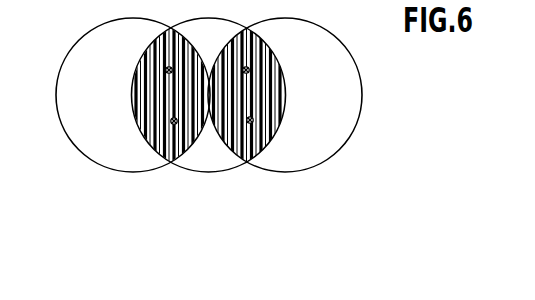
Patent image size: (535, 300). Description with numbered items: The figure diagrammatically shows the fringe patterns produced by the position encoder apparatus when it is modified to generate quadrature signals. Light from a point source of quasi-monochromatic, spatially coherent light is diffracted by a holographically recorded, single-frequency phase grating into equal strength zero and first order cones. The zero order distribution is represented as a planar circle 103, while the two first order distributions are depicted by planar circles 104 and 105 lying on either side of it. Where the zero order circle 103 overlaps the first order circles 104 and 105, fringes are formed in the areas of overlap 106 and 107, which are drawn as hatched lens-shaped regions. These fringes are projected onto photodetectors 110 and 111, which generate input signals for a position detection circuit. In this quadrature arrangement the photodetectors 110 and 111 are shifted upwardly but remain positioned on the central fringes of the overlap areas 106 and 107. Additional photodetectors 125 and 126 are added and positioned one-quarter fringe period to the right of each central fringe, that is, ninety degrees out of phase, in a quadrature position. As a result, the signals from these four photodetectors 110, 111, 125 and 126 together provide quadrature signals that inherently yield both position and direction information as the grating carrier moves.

The planar circle 103 is at (215, 19).
The planar circle 104 is at (135, 19).
The planar circle 105 is at (298, 19).
The area of overlap 106 is at (166, 28).
The area of overlap 107 is at (248, 26).
The photodetector 110 is at (166, 69).
The photodetector 111 is at (250, 70).
The photodetector 125 is at (170, 122).
The photodetector 126 is at (254, 120).